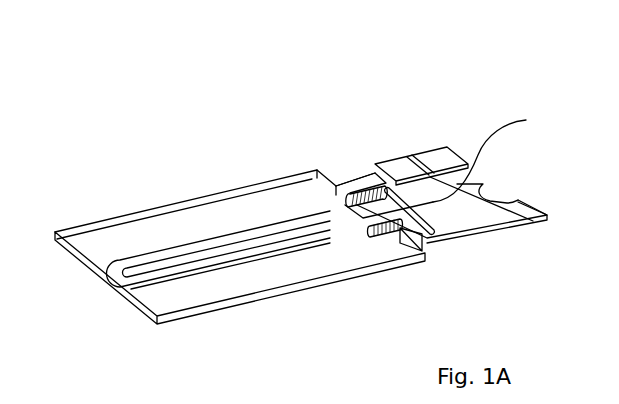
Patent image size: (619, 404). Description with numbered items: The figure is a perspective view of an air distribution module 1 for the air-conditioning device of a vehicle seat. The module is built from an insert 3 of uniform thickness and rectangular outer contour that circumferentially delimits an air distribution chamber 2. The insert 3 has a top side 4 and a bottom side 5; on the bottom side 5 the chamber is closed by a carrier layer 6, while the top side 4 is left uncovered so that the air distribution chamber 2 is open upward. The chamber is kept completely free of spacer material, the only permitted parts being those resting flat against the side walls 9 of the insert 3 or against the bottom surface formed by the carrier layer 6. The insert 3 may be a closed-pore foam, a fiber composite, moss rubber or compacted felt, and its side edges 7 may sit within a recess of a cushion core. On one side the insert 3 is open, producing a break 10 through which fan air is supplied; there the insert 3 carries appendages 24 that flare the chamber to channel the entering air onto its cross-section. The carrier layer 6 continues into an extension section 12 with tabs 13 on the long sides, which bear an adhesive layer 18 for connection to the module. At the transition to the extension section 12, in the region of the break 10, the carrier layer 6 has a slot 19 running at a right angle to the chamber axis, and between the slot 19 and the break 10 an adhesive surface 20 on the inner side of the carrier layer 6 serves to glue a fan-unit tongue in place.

The air distribution module 1 is at (86, 168).
The air distribution chamber 2 is at (175, 235).
The insert 3 is at (303, 168).
The top side 4 is at (335, 182).
The bottom side 5 is at (330, 207).
The carrier layer 6 is at (414, 222).
The side edges 7 is at (192, 290).
The side walls 9 is at (105, 217).
The break 10 is at (353, 191).
The extension section 12 is at (446, 105).
The tab 13 is at (535, 220).
The adhesive layer 18 is at (435, 137).
The slot 19 is at (442, 205).
The adhesive surface 20 is at (387, 195).
The appendages 24 is at (512, 120).